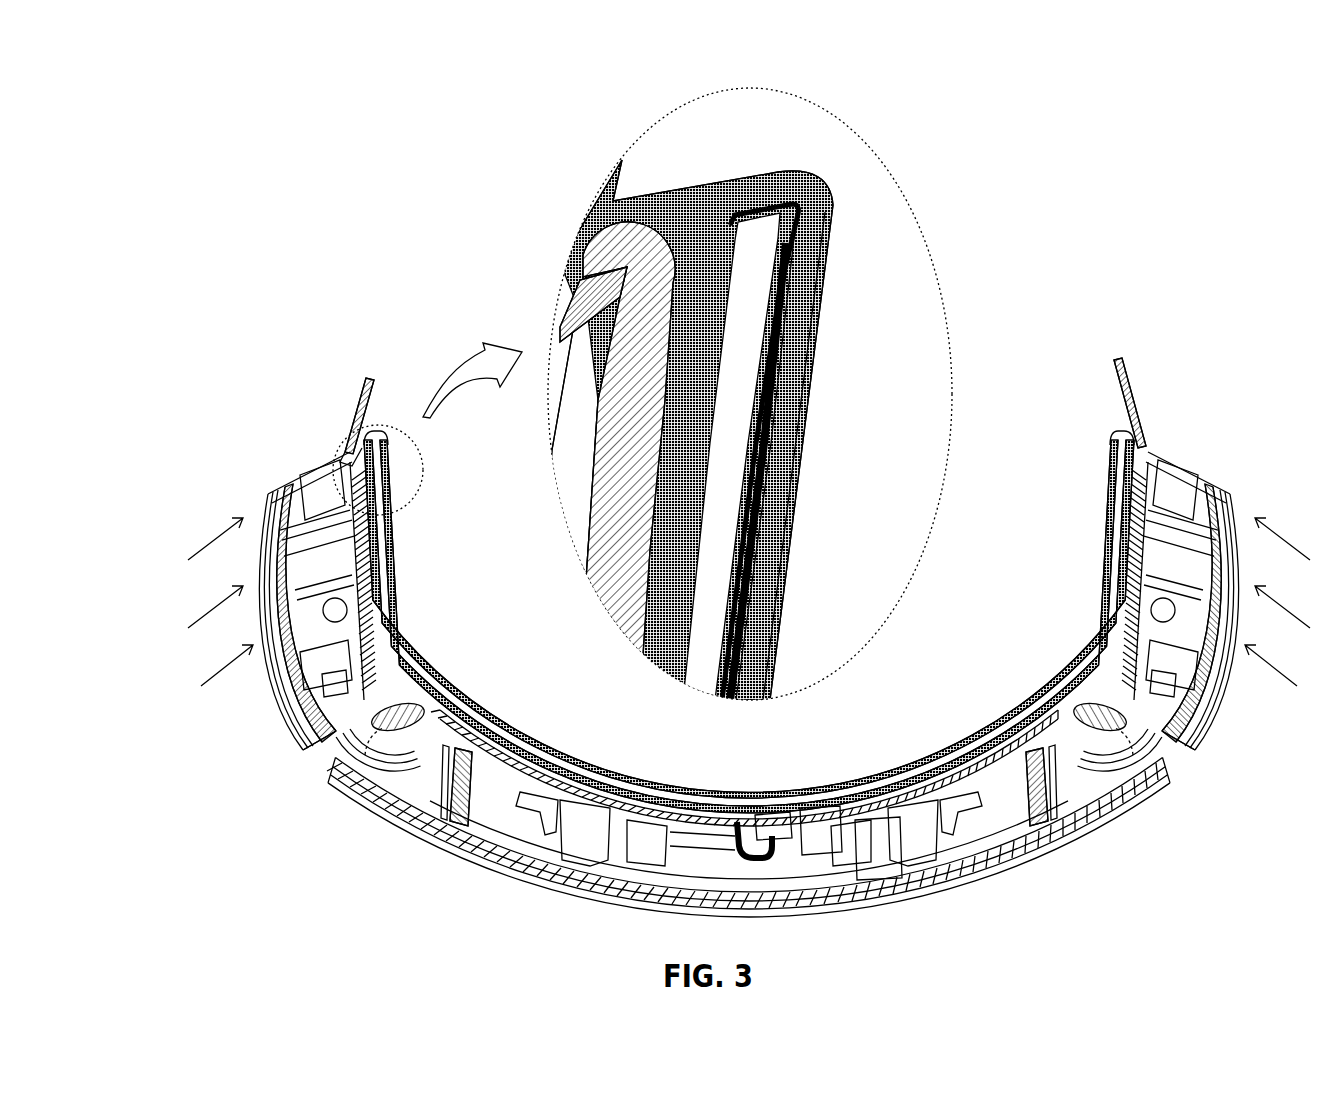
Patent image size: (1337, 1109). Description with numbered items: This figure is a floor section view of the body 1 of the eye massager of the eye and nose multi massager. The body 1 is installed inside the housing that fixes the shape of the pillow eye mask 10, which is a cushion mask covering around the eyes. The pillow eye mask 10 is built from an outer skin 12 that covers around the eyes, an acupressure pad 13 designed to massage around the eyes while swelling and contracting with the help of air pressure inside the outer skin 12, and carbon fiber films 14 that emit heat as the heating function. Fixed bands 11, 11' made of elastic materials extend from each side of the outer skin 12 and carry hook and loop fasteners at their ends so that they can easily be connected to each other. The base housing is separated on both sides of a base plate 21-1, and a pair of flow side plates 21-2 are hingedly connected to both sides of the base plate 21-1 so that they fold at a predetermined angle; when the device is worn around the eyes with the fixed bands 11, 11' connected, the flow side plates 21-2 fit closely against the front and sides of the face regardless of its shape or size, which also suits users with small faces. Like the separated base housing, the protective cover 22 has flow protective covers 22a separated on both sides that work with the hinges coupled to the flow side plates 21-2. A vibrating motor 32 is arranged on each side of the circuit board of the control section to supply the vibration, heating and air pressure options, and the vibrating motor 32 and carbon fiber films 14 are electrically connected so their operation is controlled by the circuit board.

The body of the device 1 is at (206, 188).
The pillow eye mask 10 is at (782, 473).
The fixed band 11 is at (1157, 401).
The fixed band 11' is at (330, 409).
The outer skin 12 is at (352, 446).
The acupressure pad 13 is at (808, 232).
The carbon fiber film 14 is at (797, 293).
The base plate 21-1 is at (666, 808).
The flow side plate 21-2 is at (605, 492).
The protective cover 22 is at (432, 838).
The flow protective cover 22a is at (292, 708).
The vibrating motor 32 is at (550, 856).